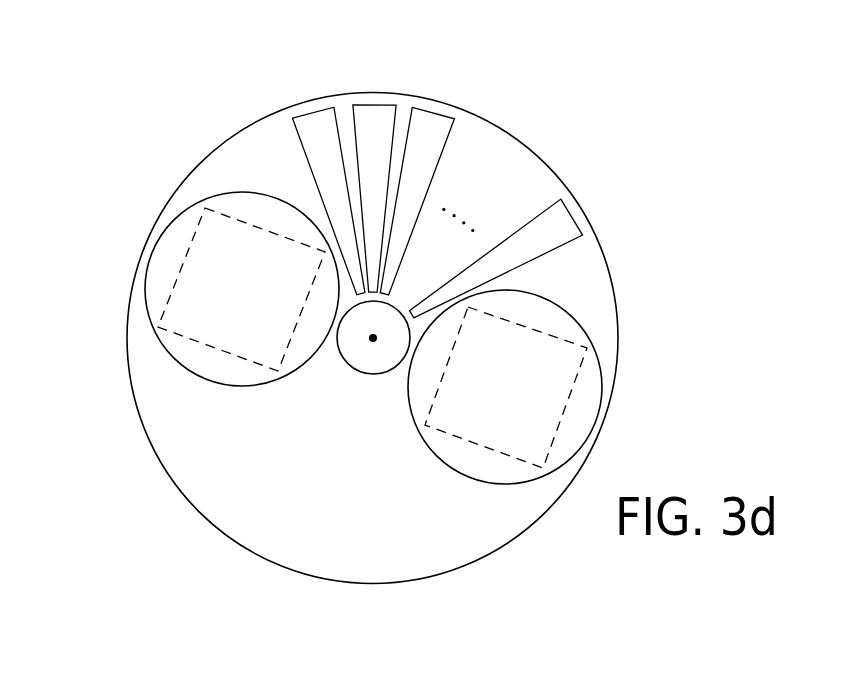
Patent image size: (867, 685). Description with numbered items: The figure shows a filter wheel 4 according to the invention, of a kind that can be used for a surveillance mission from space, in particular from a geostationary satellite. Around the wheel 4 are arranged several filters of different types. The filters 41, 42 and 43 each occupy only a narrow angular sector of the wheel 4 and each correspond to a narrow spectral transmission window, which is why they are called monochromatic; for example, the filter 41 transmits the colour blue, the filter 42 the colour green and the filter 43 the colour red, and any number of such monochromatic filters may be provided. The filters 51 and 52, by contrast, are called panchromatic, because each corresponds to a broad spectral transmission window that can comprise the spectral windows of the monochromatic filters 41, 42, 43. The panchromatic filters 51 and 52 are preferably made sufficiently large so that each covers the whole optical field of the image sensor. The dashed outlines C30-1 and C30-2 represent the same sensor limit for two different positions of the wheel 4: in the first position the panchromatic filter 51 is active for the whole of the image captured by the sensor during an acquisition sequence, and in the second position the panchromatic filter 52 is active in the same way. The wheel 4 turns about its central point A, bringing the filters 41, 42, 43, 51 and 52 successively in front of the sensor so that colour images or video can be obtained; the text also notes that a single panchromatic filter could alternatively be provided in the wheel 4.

The filter wheel 4 is at (608, 156).
The monochromatic filter 41 is at (312, 110).
The monochromatic filter 42 is at (370, 100).
The monochromatic filter 43 is at (433, 103).
The panchromatic filter 51 is at (177, 363).
The panchromatic filter 52 is at (570, 313).
The limit C30 for first wheel position C30-1 is at (183, 260).
The limit C30 for second wheel position C30-2 is at (571, 395).
The axis of rotation A is at (365, 348).